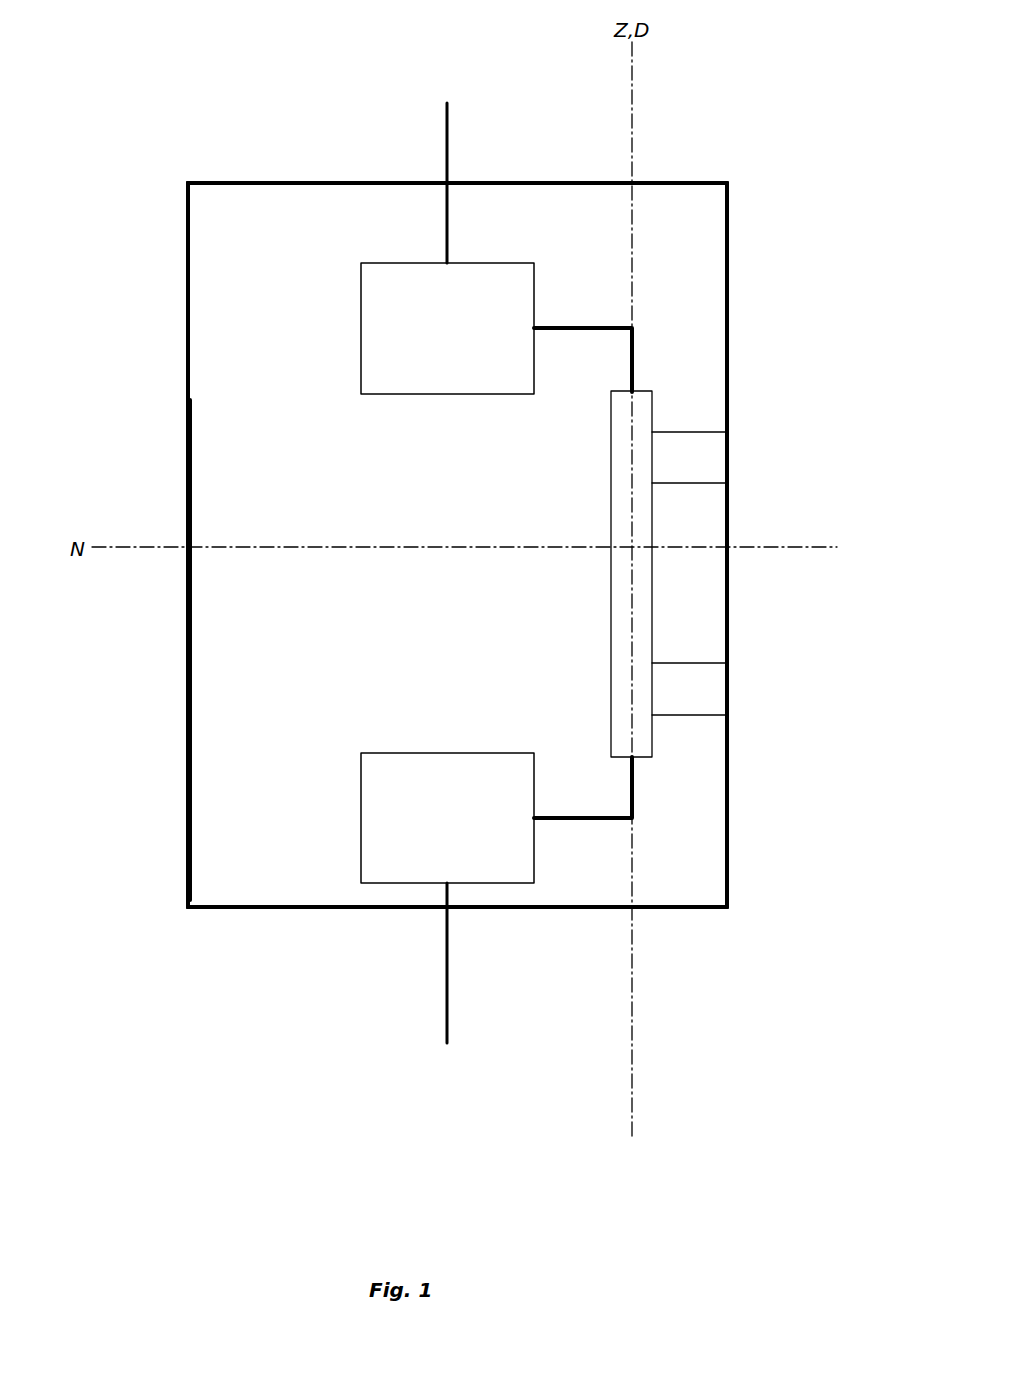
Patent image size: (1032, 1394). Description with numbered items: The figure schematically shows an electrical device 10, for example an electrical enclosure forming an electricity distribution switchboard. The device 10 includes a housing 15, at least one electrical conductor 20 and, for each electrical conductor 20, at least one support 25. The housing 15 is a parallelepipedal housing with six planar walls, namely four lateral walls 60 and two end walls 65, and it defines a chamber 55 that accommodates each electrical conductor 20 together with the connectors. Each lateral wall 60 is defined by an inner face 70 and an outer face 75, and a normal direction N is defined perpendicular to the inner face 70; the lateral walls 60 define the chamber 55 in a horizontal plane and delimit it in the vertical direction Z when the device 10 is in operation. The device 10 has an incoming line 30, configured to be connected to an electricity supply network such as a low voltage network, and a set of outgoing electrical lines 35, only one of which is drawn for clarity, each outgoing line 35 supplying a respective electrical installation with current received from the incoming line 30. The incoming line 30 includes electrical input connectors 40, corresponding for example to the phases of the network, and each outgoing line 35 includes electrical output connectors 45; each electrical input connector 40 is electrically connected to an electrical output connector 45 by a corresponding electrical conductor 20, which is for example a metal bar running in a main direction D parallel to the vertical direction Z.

The electrical device 10 is at (145, 148).
The housing 15 is at (188, 425).
The electrical conductor 20 is at (640, 590).
The support 25 is at (698, 457).
The incoming line 30 is at (484, 228).
The outgoing electrical line 35 is at (569, 882).
The electrical input connector 40 is at (580, 312).
The electrical output connector 45 is at (640, 815).
The chamber 55 is at (276, 670).
The lateral wall 60 is at (188, 850).
The end wall 65 is at (325, 183).
The inner face 70 is at (183, 638).
The outer face 75 is at (192, 574).